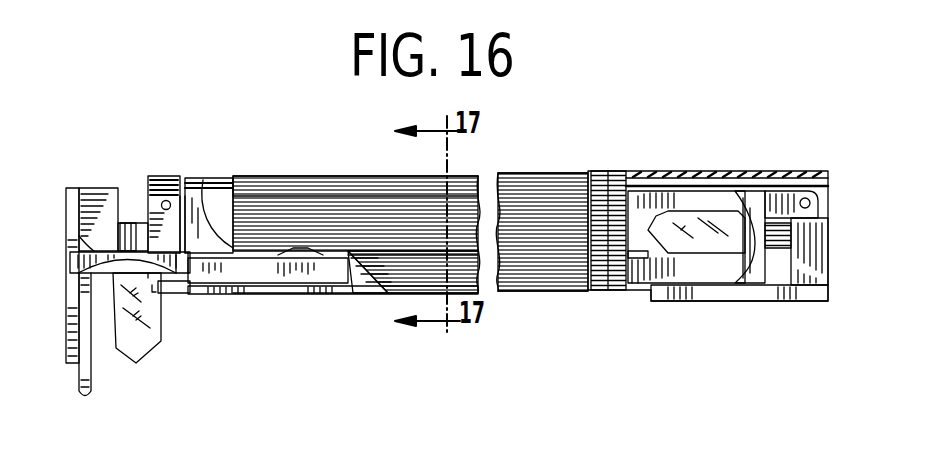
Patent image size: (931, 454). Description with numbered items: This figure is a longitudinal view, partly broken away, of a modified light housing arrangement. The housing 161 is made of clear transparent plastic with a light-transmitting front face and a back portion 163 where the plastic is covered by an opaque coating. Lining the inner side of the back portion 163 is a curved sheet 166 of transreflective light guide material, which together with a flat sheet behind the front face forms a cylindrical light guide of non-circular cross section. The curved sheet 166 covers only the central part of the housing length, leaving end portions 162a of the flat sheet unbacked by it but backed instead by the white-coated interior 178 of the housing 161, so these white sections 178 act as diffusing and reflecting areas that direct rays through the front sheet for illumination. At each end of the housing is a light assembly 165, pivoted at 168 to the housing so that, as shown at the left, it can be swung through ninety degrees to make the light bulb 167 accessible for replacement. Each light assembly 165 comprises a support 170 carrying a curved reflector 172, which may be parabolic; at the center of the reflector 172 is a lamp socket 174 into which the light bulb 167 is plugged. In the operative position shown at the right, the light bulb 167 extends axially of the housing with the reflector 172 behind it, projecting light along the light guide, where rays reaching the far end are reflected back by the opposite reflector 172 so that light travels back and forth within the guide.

The housing 161 is at (513, 165).
The end portions of the flat sheet 162a is at (267, 182).
The back portion 163 is at (195, 197).
The light assembly 165 is at (132, 364).
The curved sheet 166 is at (609, 165).
The light bulb 167 is at (143, 333).
The pivot 168 is at (157, 193).
The support 170 is at (85, 182).
The curved reflector 172 is at (163, 273).
The lamp socket 174 is at (60, 262).
The interior of the housing 178 is at (247, 263).